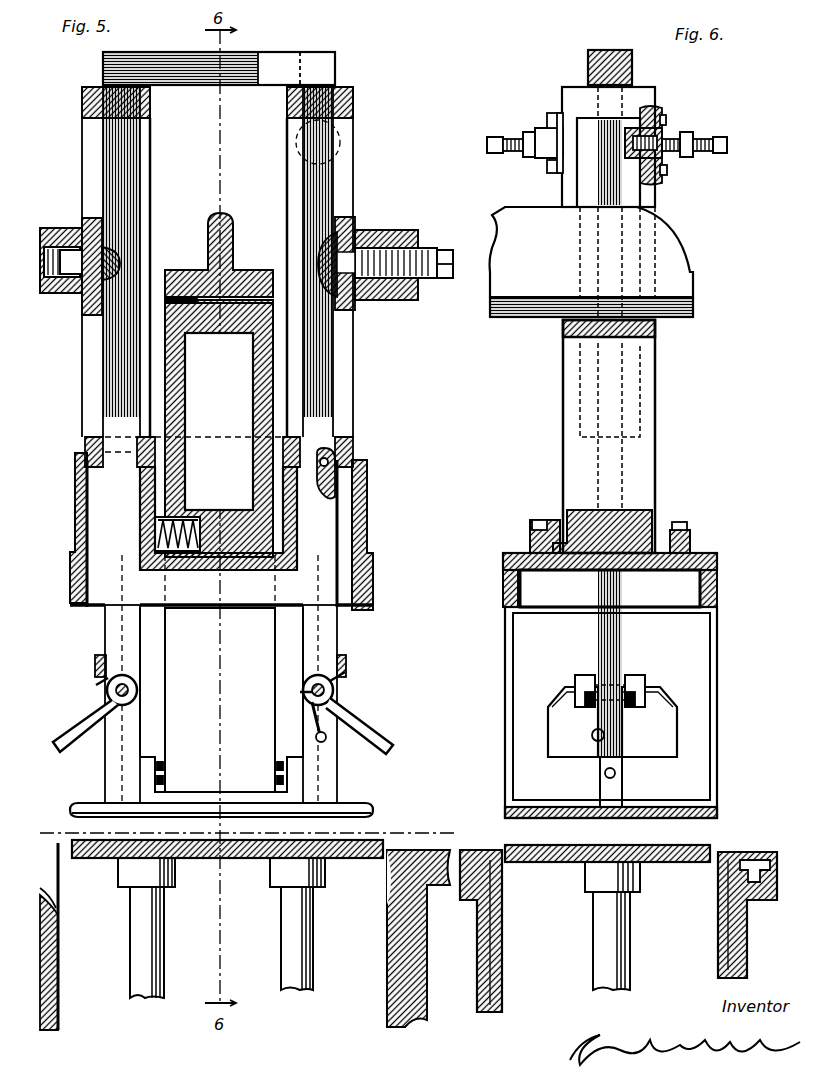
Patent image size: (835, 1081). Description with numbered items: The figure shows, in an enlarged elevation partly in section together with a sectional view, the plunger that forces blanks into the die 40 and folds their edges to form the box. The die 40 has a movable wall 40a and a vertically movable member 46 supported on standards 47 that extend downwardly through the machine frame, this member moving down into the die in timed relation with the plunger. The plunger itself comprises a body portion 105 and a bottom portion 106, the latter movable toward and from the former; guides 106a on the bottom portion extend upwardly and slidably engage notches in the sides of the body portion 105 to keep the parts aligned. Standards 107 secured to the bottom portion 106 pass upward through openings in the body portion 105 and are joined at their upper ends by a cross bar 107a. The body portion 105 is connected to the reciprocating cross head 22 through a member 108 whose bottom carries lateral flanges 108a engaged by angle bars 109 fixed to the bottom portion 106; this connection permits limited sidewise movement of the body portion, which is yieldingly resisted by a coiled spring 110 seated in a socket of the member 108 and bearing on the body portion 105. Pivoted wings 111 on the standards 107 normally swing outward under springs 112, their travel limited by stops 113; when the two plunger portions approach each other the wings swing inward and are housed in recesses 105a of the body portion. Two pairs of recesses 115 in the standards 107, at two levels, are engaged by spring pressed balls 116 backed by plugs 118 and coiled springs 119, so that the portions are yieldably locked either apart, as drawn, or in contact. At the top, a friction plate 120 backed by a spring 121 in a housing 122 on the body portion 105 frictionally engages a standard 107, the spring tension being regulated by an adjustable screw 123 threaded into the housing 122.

In FIG. 5, the reciprocating cross head 22 is at (233, 248).
In FIG. 6, the reciprocating cross head 22 is at (662, 262).
In FIG. 6, the die 40 is at (718, 935).
In FIG. 5, the movable wall of the die 40a is at (56, 1000).
In FIG. 5, the vertically movable member 46 is at (236, 860).
In FIG. 6, the vertically movable member 46 is at (680, 862).
In FIG. 5, the standards 47 is at (290, 955).
In FIG. 6, the standards 47 is at (633, 968).
In FIG. 5, the body portion 105 is at (70, 565).
In FIG. 6, the body portion 105 is at (563, 190).
In FIG. 5, the recesses 105a is at (88, 485).
In FIG. 5, the bottom portion 106 is at (88, 803).
In FIG. 6, the bottom portion 106 is at (650, 807).
In FIG. 5, the guides 106a is at (278, 657).
In FIG. 6, the guides 106a is at (712, 685).
In FIG. 5, the standards 107 is at (118, 150).
In FIG. 6, the standards 107 is at (613, 196).
In FIG. 5, the cross bar 107a is at (257, 72).
In FIG. 6, the cross bar 107a is at (634, 72).
In FIG. 5, the member 108 is at (258, 382).
In FIG. 6, the member 108 is at (638, 455).
In FIG. 6, the lateral flanges 108a is at (665, 535).
In FIG. 6, the angle bars 109 is at (689, 548).
In FIG. 5, the coiled spring 110 is at (196, 513).
In FIG. 5, the pivoted wings 111 is at (96, 706).
In FIG. 6, the pivoted wings 111 is at (655, 736).
In FIG. 5, the springs 112 is at (305, 718).
In FIG. 6, the springs 112 is at (590, 688).
In FIG. 5, the stops 113 is at (95, 660).
In FIG. 5, the recesses 115 is at (120, 250).
In FIG. 5, the spring pressed balls 116 is at (76, 229).
In FIG. 5, the plugs 118 is at (80, 318).
In FIG. 5, the coiled springs 119 is at (60, 293).
In FIG. 6, the friction plate 120 is at (655, 178).
In FIG. 6, the spring 121 is at (668, 162).
In FIG. 6, the housing 122 is at (663, 130).
In FIG. 6, the adjustable screw 123 is at (497, 134).